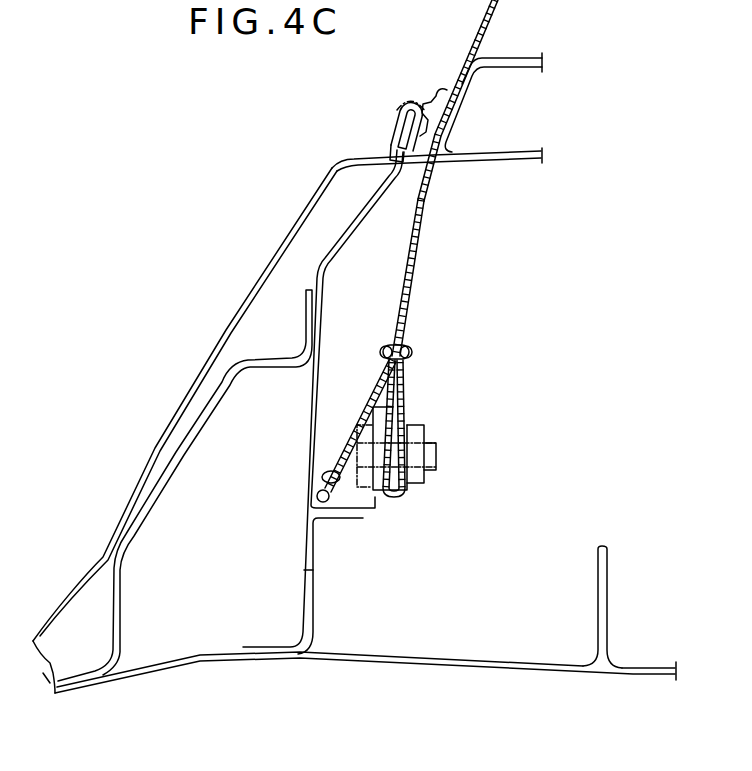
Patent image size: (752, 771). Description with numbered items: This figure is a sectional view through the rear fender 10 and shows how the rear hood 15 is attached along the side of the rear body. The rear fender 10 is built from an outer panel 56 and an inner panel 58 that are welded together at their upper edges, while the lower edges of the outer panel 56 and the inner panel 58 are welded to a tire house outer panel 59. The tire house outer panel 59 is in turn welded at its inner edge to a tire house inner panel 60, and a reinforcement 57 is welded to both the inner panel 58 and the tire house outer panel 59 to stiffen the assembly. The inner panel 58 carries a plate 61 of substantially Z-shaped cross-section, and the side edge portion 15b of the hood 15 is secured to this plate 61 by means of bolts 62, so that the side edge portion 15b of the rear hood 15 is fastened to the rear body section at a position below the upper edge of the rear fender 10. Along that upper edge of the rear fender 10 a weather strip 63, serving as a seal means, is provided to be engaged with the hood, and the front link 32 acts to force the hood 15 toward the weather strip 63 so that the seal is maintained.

The rear fender 10 is at (277, 211).
The rear hood 15 is at (480, 33).
The side edge portion of the hood 15b is at (418, 247).
The front link 32 is at (520, 57).
The outer panel 56 is at (258, 268).
The reinforcement 57 is at (152, 508).
The inner panel 58 is at (308, 445).
The tire house outer panel 59 is at (433, 656).
The tire house inner panel 60 is at (626, 665).
The plate 61 is at (365, 518).
The bolts 62 is at (428, 477).
The weather strip 63 is at (393, 128).